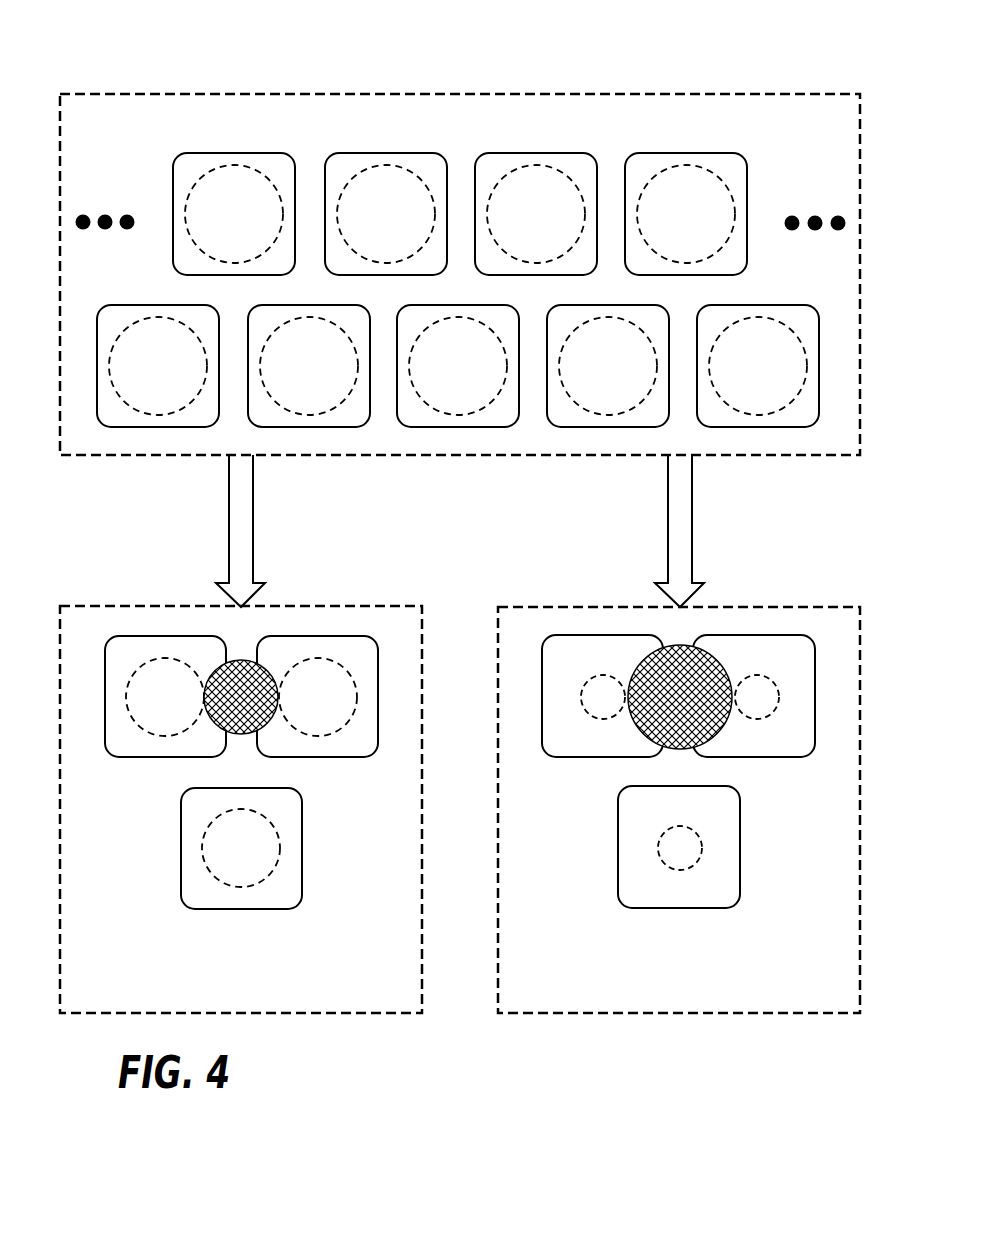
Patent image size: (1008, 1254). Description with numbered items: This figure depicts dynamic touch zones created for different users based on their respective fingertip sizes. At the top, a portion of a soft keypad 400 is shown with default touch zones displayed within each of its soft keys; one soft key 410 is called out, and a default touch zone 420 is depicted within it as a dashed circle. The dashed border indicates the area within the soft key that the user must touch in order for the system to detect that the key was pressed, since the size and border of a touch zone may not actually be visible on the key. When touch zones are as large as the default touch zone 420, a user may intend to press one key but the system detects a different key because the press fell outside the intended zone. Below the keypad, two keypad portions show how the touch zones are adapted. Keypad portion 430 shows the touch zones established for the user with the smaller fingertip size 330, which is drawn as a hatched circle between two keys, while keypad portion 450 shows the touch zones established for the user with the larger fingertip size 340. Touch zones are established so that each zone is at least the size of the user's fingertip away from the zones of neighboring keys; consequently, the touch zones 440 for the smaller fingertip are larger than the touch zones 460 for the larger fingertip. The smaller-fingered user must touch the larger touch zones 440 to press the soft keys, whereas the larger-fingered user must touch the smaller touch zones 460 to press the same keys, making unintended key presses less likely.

The soft keypad 400 is at (153, 140).
The soft key 410 is at (503, 153).
The touch zone 420 is at (553, 170).
The fingertip size 330 is at (241, 660).
The fingertip size 340 is at (678, 645).
The keypad portion 430 is at (254, 1005).
The touch zones 440 is at (280, 847).
The keypad portion 450 is at (694, 1005).
The touch zones 460 is at (700, 841).